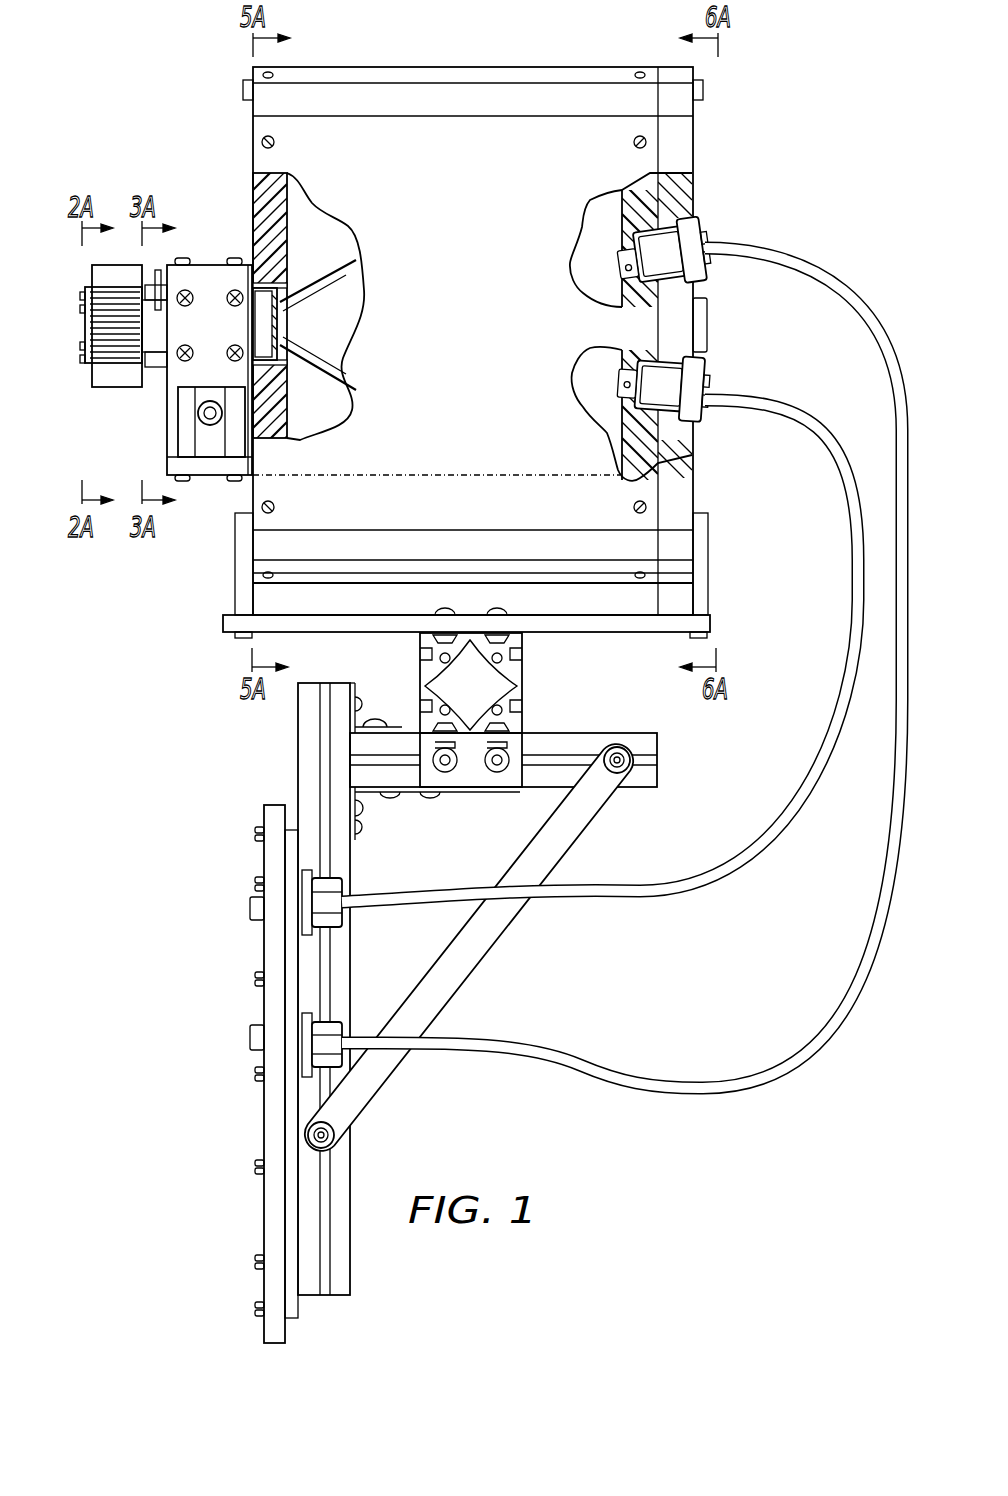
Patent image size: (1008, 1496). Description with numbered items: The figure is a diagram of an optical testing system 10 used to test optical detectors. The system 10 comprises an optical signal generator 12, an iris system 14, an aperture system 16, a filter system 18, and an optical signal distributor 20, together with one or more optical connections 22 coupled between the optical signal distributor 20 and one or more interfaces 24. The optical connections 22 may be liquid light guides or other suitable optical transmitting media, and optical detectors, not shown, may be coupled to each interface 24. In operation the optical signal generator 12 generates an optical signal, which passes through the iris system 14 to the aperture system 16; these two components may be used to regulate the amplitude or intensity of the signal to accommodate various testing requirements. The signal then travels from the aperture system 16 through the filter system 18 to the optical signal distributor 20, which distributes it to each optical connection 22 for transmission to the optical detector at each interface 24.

The optical testing system 10 is at (806, 104).
The optical signal generator 12 is at (104, 390).
The iris system 14 is at (158, 372).
The aperture system 16 is at (204, 264).
The filter system 18 is at (281, 281).
The optical signal distributor 20 is at (548, 67).
The optical connections 22 is at (745, 858).
The interfaces 24 is at (263, 1210).